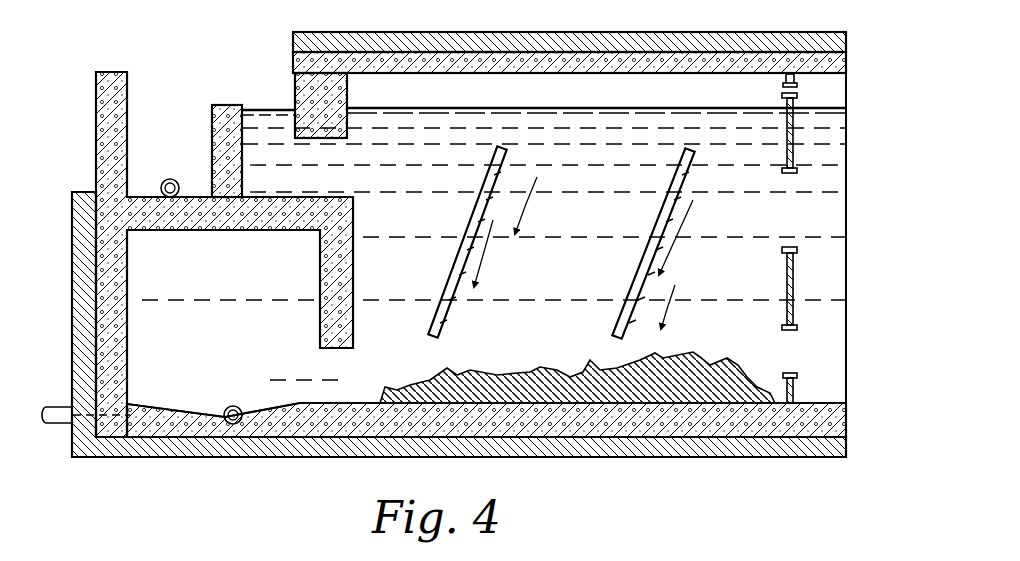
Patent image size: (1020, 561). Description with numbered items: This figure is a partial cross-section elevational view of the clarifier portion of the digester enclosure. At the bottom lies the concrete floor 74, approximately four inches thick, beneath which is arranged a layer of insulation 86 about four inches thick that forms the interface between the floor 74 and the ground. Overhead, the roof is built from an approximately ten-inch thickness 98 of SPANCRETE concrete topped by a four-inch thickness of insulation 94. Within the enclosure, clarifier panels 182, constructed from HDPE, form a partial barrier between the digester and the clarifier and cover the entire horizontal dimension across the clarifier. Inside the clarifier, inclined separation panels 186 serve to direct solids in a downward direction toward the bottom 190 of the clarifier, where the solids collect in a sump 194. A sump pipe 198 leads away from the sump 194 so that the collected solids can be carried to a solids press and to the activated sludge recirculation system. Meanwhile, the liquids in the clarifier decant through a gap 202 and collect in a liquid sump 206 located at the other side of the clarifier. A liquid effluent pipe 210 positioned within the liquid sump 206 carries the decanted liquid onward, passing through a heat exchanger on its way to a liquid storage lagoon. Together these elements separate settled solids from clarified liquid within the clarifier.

The floor 74 is at (823, 418).
The insulation 86 is at (827, 448).
The insulation 94 is at (846, 42).
The thickness of SPANCRETE concrete 98 is at (837, 62).
The clarifier panels 182 is at (790, 133).
The separation panels 186 is at (657, 215).
The bottom of the clarifier 190 is at (605, 392).
The sump 194 is at (267, 403).
The sump pipe 198 is at (217, 385).
The gap 202 is at (317, 163).
The liquid sump 206 is at (162, 132).
The liquid effluent pipe 210 is at (160, 182).